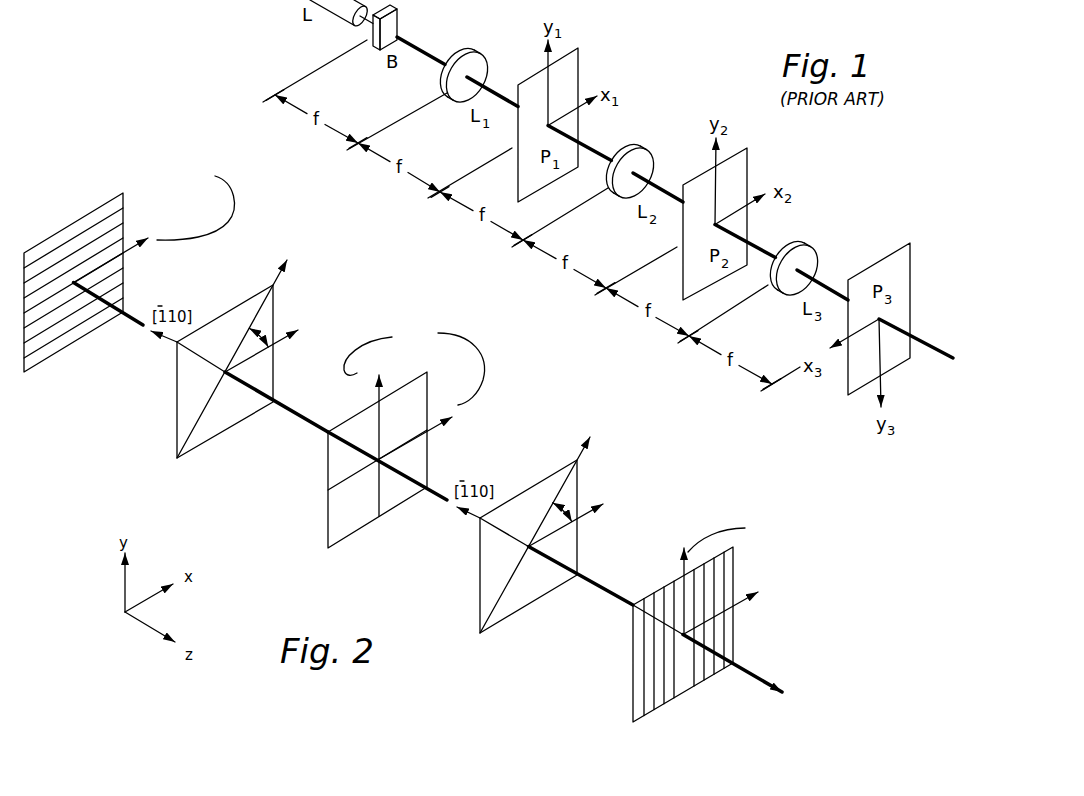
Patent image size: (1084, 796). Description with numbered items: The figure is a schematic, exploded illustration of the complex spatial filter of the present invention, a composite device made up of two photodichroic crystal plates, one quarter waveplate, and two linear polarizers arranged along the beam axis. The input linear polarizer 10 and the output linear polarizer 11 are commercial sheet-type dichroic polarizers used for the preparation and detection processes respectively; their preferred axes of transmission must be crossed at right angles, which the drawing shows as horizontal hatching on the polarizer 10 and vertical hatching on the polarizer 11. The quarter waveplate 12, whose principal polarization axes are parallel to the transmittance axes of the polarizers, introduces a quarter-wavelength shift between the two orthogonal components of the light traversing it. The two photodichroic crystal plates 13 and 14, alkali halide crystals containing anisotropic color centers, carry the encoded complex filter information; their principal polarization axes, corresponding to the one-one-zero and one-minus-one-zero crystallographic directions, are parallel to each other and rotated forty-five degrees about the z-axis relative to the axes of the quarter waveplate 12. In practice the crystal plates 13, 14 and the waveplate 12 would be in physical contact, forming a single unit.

The linear polarizer 10 is at (67, 352).
The linear polarizer 11 is at (664, 700).
The quarter waveplate 12 is at (362, 532).
The photodichroic crystal plate 13 is at (212, 441).
The photodichroic crystal plate 14 is at (510, 616).